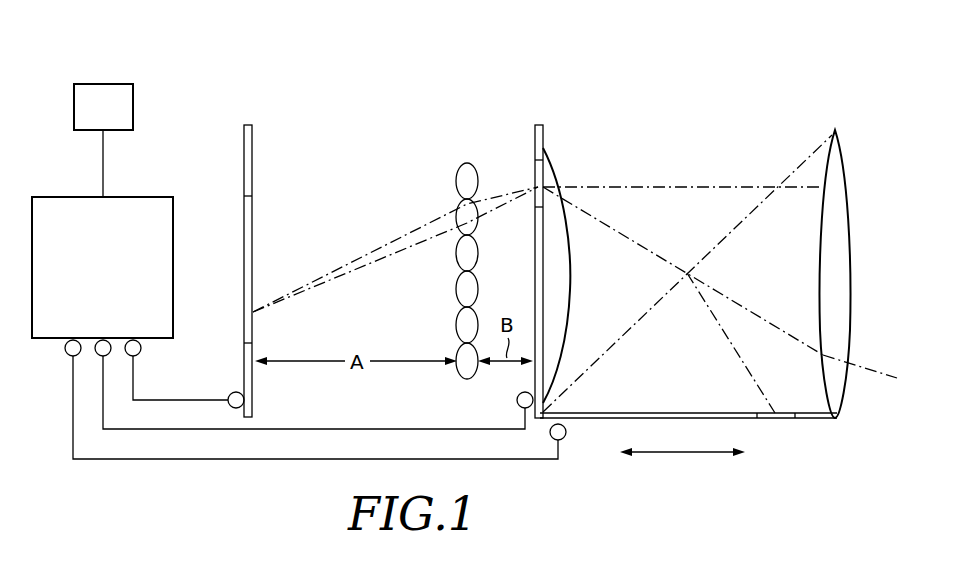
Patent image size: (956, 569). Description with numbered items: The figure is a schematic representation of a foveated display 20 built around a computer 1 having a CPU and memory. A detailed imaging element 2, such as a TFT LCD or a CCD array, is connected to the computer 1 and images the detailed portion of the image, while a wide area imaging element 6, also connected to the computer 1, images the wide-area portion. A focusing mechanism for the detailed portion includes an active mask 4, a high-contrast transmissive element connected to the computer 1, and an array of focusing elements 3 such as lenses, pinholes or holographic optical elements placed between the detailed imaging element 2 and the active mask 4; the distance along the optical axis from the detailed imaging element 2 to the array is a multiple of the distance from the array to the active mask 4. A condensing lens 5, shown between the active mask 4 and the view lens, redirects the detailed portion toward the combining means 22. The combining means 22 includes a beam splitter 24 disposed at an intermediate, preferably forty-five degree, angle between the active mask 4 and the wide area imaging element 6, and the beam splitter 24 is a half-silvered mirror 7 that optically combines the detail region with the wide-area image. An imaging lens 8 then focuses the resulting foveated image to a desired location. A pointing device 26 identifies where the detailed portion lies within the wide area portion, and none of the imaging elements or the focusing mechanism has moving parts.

The computer 1 is at (158, 197).
The detailed imaging element 2 is at (252, 155).
The focusing elements 3 is at (457, 172).
The active mask 4 is at (537, 137).
The condensing lens 5 is at (570, 288).
The wide area imaging element 6 is at (656, 413).
The half-silvered mirror 7 is at (687, 273).
The imaging lens 8 is at (843, 148).
The foveated display 20 is at (168, 85).
The combining means 22 is at (603, 70).
The beam splitter 24 is at (792, 138).
The pointing device 26 is at (103, 140).